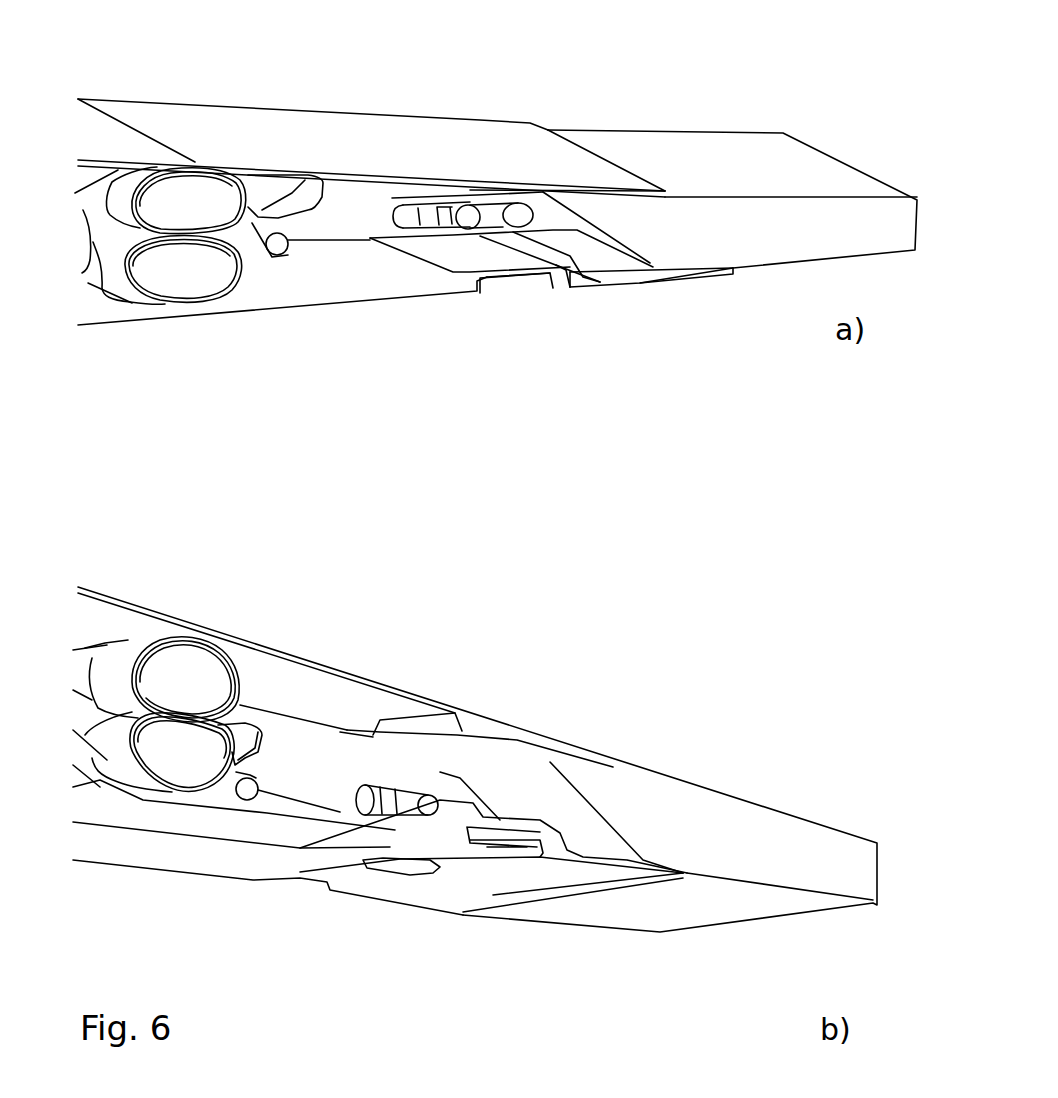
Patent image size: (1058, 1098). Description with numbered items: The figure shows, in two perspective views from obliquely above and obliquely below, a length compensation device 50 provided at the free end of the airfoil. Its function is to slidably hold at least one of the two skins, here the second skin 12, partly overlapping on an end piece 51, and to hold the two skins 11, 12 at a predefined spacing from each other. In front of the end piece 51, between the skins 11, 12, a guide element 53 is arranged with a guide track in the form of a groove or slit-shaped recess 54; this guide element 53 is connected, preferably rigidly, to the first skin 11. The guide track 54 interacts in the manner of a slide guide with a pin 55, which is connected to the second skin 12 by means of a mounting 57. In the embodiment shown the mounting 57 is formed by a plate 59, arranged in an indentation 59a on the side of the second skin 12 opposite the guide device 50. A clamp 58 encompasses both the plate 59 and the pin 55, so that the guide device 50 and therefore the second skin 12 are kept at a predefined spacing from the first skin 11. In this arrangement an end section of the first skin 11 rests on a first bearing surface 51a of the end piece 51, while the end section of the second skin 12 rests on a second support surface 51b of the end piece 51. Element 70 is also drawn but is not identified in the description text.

The first skin 11 is at (407, 138).
The second skin 12 is at (287, 292).
The length compensation device 50 is at (765, 342).
The end piece 51 is at (723, 153).
The first bearing surface 51a is at (608, 190).
The second support surface 51b is at (690, 267).
The guide element 53 is at (372, 220).
The guide track 54 is at (515, 217).
The pin 55 is at (480, 210).
The mounting 57 is at (323, 905).
The clamp 58 is at (427, 218).
The plate 59 is at (523, 282).
The indentation 59a is at (493, 276).
The cable 70 is at (183, 280).